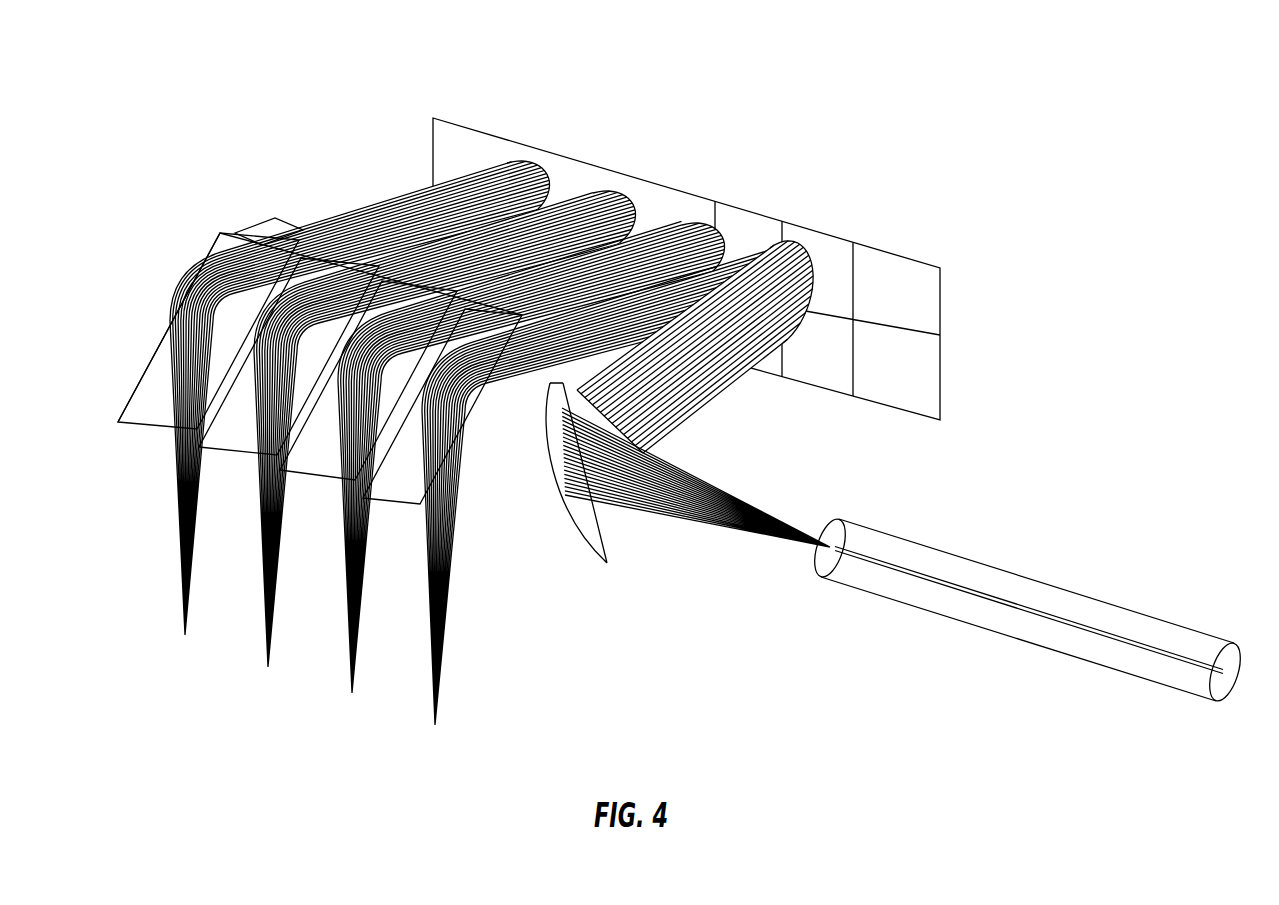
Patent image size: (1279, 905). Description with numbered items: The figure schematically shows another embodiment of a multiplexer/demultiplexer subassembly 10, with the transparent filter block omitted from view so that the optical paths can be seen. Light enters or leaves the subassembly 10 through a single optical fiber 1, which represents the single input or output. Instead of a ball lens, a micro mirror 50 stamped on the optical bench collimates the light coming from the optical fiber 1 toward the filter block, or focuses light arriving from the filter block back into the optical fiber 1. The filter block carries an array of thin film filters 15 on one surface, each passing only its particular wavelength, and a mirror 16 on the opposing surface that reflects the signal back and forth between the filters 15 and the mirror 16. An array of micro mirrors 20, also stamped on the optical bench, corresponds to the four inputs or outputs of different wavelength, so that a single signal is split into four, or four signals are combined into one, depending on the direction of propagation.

The optical fiber 1 is at (1040, 596).
The Mux/Demux subassembly 10 is at (677, 418).
The thin film filters 15 is at (263, 232).
The mirror 16 is at (580, 160).
The micro mirrors 20 is at (277, 410).
The micro mirror 50 is at (577, 528).